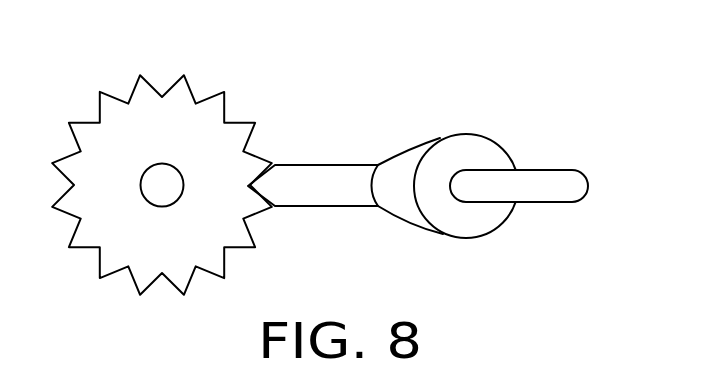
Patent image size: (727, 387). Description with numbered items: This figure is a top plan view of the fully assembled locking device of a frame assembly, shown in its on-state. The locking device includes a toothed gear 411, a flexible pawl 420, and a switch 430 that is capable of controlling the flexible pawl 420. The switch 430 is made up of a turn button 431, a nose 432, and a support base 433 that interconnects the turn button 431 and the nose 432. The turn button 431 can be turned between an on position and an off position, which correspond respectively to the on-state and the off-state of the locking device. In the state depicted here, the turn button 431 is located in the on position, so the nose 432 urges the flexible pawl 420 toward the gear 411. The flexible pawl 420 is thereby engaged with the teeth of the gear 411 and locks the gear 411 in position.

The toothed gear 411 is at (176, 104).
The flexible pawl 420 is at (314, 182).
The switch 430 is at (500, 162).
The turn button 431 is at (558, 188).
The nose 432 is at (401, 172).
The support base 433 is at (468, 153).